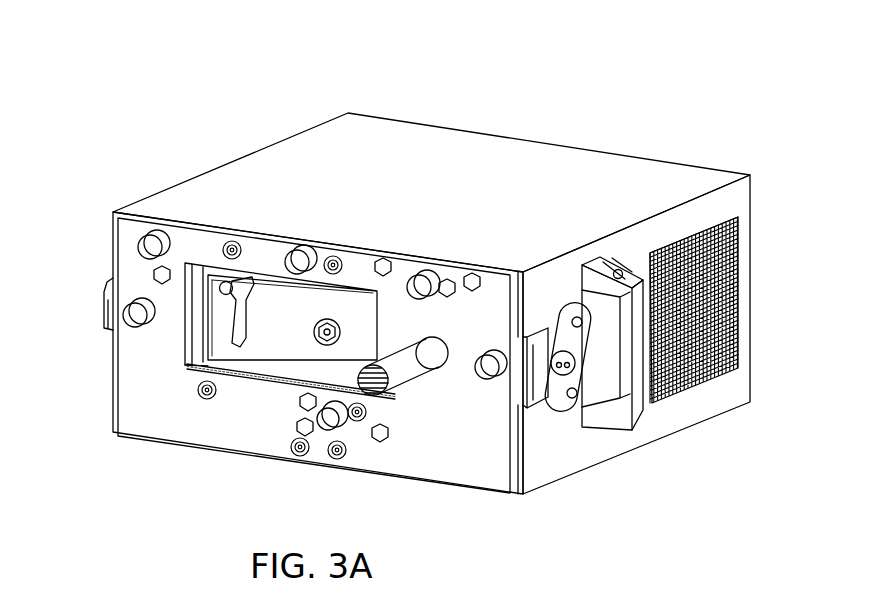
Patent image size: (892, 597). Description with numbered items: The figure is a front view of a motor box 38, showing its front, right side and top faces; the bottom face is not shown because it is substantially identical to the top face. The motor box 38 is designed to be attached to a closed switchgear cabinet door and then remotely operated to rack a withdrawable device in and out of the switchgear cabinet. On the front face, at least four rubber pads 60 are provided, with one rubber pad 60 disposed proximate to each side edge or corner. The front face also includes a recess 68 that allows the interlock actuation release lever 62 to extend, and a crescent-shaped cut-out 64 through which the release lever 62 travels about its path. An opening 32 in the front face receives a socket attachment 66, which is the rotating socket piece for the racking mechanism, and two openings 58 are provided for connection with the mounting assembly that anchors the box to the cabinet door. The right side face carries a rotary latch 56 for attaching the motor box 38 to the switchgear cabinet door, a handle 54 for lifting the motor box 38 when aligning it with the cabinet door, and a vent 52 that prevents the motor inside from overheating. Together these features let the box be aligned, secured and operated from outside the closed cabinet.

The motor box 38 is at (413, 165).
The vent 52 is at (722, 283).
The handle 54 is at (641, 390).
The rotary latch 56 is at (575, 405).
The openings 58 is at (153, 235).
The rubber pads 60 is at (298, 258).
The interlock actuation release lever 62 is at (246, 290).
The crescent-shaped cut-out 64 is at (232, 320).
The socket attachment 66 is at (390, 390).
The recess 68 is at (275, 343).
The opening 32 is at (435, 385).